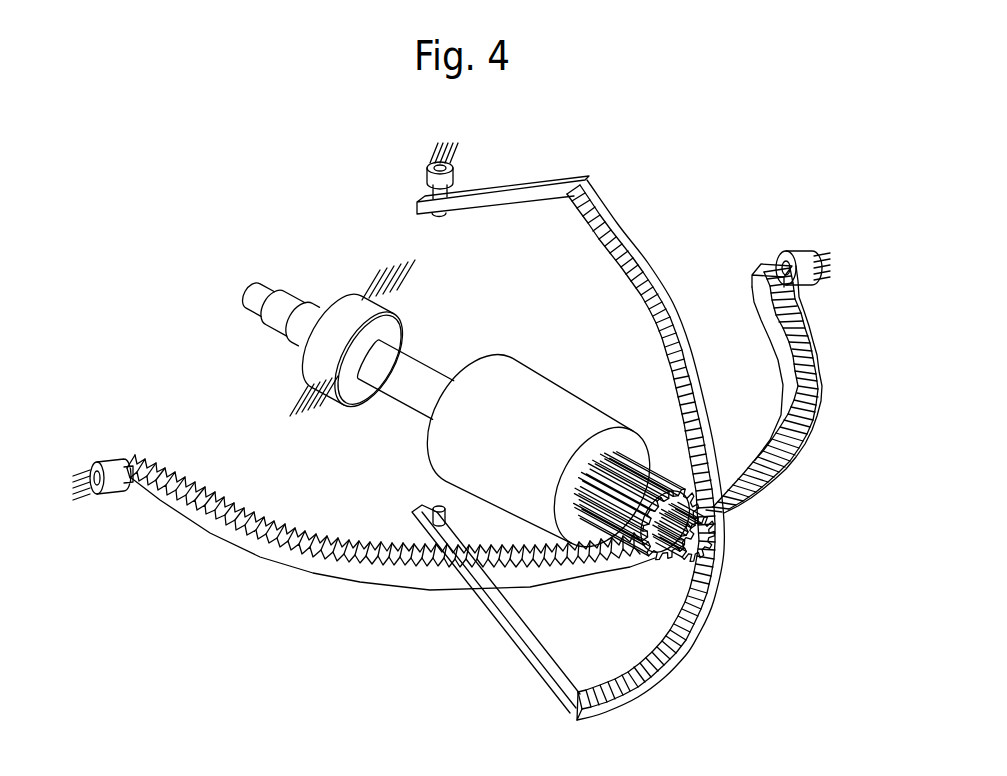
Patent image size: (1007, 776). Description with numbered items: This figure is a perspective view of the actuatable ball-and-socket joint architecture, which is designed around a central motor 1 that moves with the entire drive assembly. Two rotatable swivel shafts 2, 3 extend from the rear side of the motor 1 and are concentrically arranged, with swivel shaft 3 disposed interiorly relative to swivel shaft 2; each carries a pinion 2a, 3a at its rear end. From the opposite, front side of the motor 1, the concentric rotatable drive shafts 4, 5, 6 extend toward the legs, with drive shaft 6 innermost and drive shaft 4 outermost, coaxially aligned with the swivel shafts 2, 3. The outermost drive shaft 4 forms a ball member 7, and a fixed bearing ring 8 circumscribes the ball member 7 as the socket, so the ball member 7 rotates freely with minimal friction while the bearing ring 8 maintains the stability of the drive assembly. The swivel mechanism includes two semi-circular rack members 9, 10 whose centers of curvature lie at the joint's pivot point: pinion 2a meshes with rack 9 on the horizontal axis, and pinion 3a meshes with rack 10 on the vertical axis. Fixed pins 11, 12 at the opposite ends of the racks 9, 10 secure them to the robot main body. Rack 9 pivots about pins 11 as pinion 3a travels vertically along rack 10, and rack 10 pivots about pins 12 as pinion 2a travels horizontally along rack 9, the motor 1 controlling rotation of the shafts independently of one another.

The motor 1 is at (518, 444).
The swivel shaft 2 is at (636, 503).
The pinion 2a is at (631, 562).
The swivel shaft 3 is at (714, 557).
The pinion 3a is at (673, 562).
The drive shaft 4 is at (318, 302).
The drive shaft 5 is at (285, 293).
The drive shaft 6 is at (256, 283).
The ball member 7 is at (394, 330).
The bearing ring 8 is at (336, 340).
The rack member 9 is at (333, 571).
The rack member 10 is at (718, 595).
The pin 11 is at (112, 463).
The pin 12 is at (428, 178).